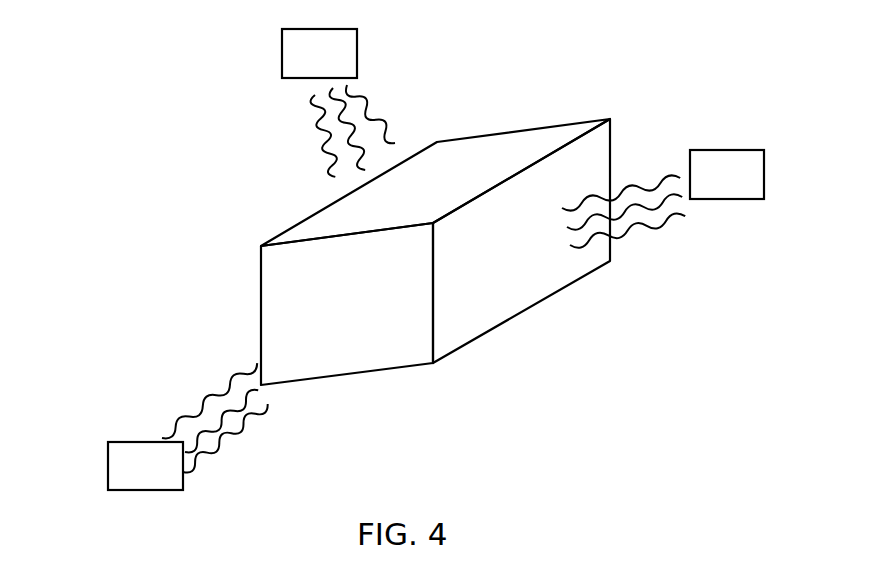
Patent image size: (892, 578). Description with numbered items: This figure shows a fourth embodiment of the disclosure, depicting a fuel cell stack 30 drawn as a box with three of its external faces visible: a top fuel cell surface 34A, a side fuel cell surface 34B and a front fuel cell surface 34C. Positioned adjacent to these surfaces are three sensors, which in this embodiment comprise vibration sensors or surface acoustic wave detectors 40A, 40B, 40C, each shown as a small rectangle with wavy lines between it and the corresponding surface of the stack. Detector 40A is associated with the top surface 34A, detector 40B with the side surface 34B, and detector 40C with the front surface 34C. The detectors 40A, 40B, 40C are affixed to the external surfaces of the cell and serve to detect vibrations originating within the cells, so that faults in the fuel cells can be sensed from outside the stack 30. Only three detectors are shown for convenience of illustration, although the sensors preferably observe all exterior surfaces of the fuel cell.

The fuel cell stack 30 is at (398, 229).
The fuel cell surface 34A is at (502, 152).
The fuel cell surface 34B is at (530, 281).
The fuel cell surface 34C is at (287, 313).
The vibration sensor or surface acoustic wave detector 40A is at (357, 53).
The vibration sensor or surface acoustic wave detector 40B is at (764, 175).
The vibration sensor or surface acoustic wave detector 40C is at (108, 468).